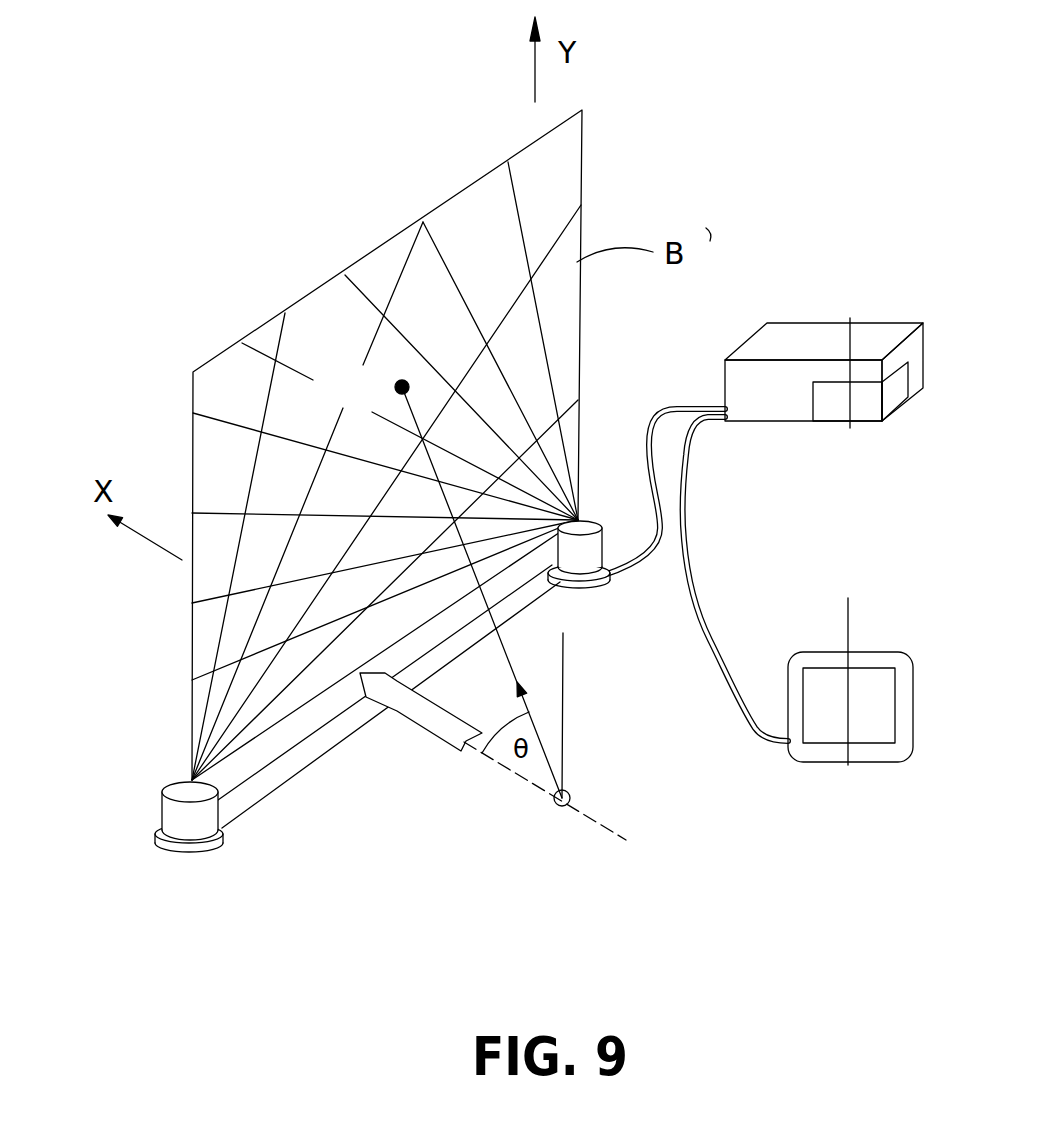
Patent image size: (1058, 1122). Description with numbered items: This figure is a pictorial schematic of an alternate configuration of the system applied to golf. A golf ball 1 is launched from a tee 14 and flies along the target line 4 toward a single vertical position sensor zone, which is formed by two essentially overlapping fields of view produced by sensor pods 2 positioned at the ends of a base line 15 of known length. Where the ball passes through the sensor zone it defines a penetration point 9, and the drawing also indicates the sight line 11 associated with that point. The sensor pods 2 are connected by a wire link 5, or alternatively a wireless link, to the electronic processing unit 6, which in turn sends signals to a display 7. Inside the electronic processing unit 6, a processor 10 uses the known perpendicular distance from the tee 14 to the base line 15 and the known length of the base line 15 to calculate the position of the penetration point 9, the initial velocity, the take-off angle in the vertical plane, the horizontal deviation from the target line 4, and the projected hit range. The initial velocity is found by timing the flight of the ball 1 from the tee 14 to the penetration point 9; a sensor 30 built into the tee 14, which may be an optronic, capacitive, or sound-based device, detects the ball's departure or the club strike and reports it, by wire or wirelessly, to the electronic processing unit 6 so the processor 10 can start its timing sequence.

The golf ball 1 is at (572, 789).
The sensor pod 2 is at (582, 553).
The target line 4 is at (520, 775).
The wire link 5 is at (667, 405).
The electronic processing unit 6 is at (883, 330).
The display 7 is at (827, 657).
The penetration point 9 is at (402, 380).
The processor 10 is at (897, 392).
The sight line from object to point (x,y) 11 is at (523, 696).
The tee 14 is at (557, 807).
The base line 15 is at (315, 755).
The sensor 30 is at (567, 815).